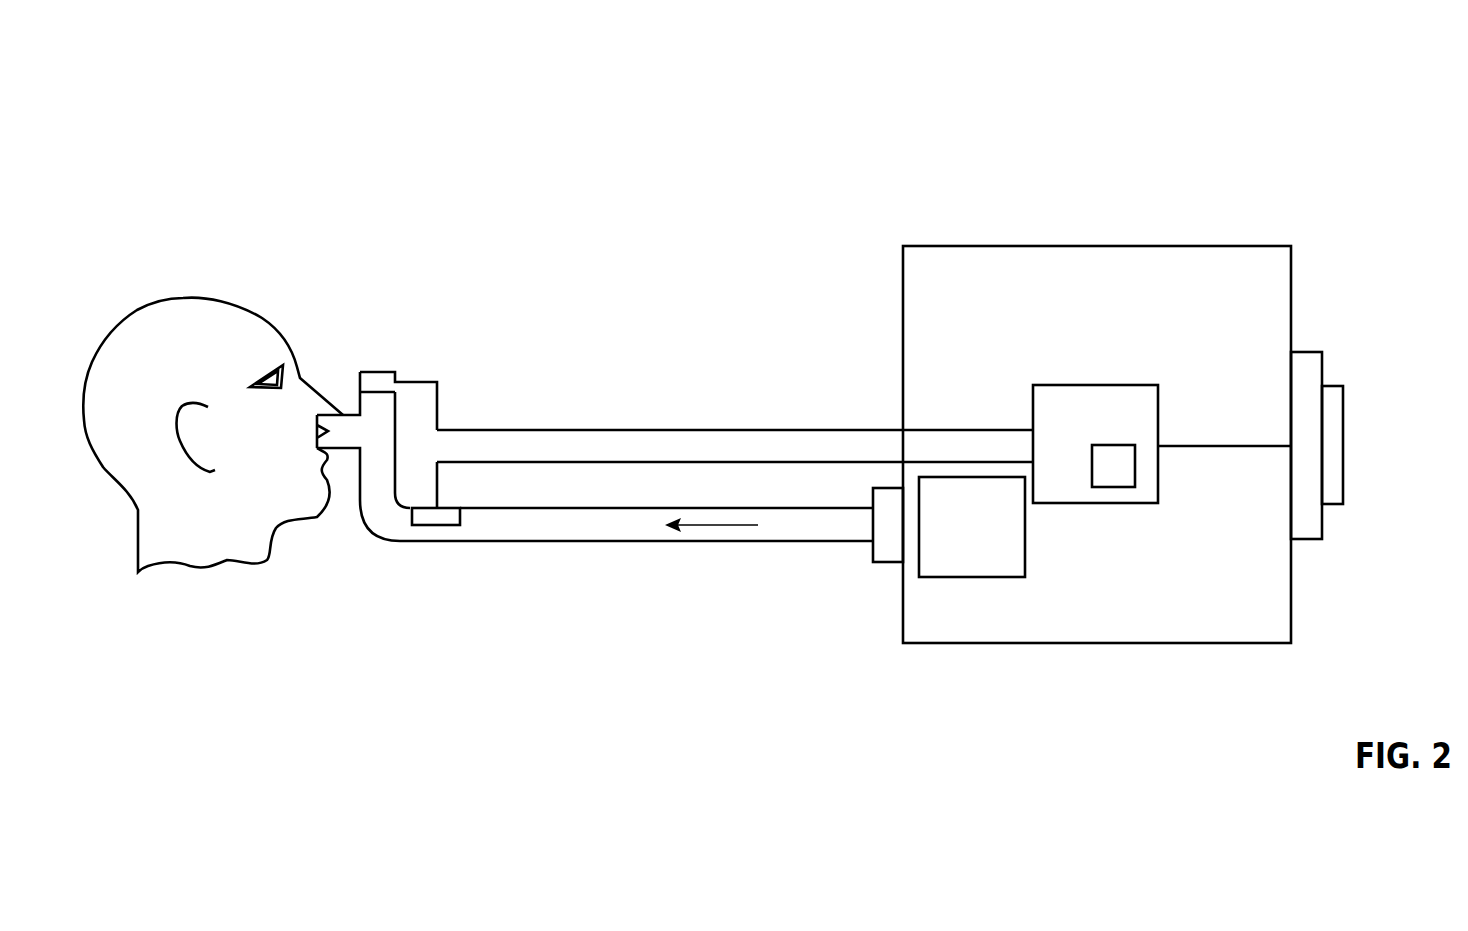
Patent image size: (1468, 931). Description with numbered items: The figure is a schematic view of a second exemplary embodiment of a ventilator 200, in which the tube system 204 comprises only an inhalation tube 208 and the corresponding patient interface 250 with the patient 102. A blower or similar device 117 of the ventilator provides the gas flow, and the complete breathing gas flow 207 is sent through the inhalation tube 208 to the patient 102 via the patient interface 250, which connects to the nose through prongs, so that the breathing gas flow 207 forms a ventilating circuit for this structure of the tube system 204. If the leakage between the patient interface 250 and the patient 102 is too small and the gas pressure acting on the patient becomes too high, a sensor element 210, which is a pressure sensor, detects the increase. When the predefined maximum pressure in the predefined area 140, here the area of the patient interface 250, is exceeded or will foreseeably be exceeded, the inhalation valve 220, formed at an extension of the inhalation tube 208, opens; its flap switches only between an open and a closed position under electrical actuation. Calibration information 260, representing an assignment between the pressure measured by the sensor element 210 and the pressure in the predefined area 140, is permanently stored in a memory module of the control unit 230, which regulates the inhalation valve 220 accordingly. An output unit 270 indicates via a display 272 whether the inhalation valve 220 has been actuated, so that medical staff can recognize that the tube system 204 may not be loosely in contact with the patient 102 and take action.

The patient 102 is at (183, 298).
The blower 117 is at (992, 540).
The predefined area 140 is at (365, 430).
The ventilator 200 is at (922, 172).
The tube system 204 is at (832, 556).
The breathing gas flow 207 is at (713, 527).
The inhalation tube 208 is at (587, 541).
The sensor element 210 is at (445, 518).
The inhalation valve 220 is at (377, 372).
The control unit 230 is at (1065, 385).
The patient interface 250 is at (343, 415).
The calibration information 260 is at (1112, 445).
The output unit 270 is at (1304, 352).
The display 272 is at (1343, 440).